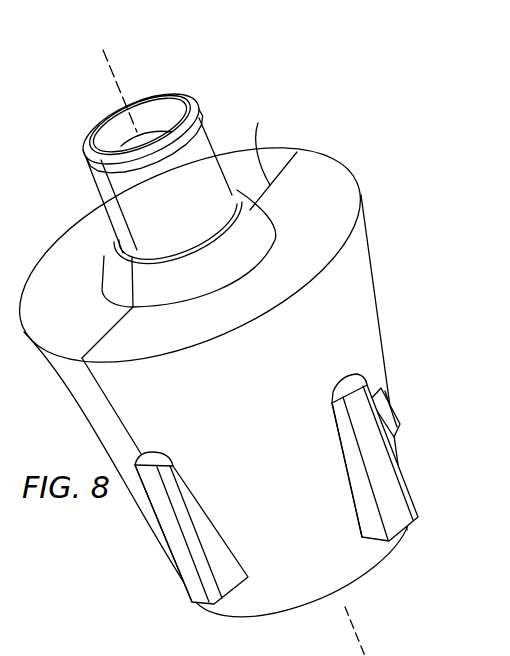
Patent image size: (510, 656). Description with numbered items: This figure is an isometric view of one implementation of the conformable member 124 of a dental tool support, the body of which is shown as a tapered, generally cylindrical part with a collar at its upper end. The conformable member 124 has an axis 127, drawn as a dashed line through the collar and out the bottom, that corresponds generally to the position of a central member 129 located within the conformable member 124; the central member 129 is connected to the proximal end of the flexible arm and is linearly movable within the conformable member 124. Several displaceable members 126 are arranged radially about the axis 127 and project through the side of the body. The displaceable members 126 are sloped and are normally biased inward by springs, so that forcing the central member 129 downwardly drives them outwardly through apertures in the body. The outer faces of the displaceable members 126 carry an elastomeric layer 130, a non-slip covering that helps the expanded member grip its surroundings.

The conformable member 124 is at (371, 198).
The displaceable member 126 is at (397, 411).
The axis 127 is at (112, 62).
The central member 129 is at (100, 181).
The elastomeric layer 130 is at (397, 497).